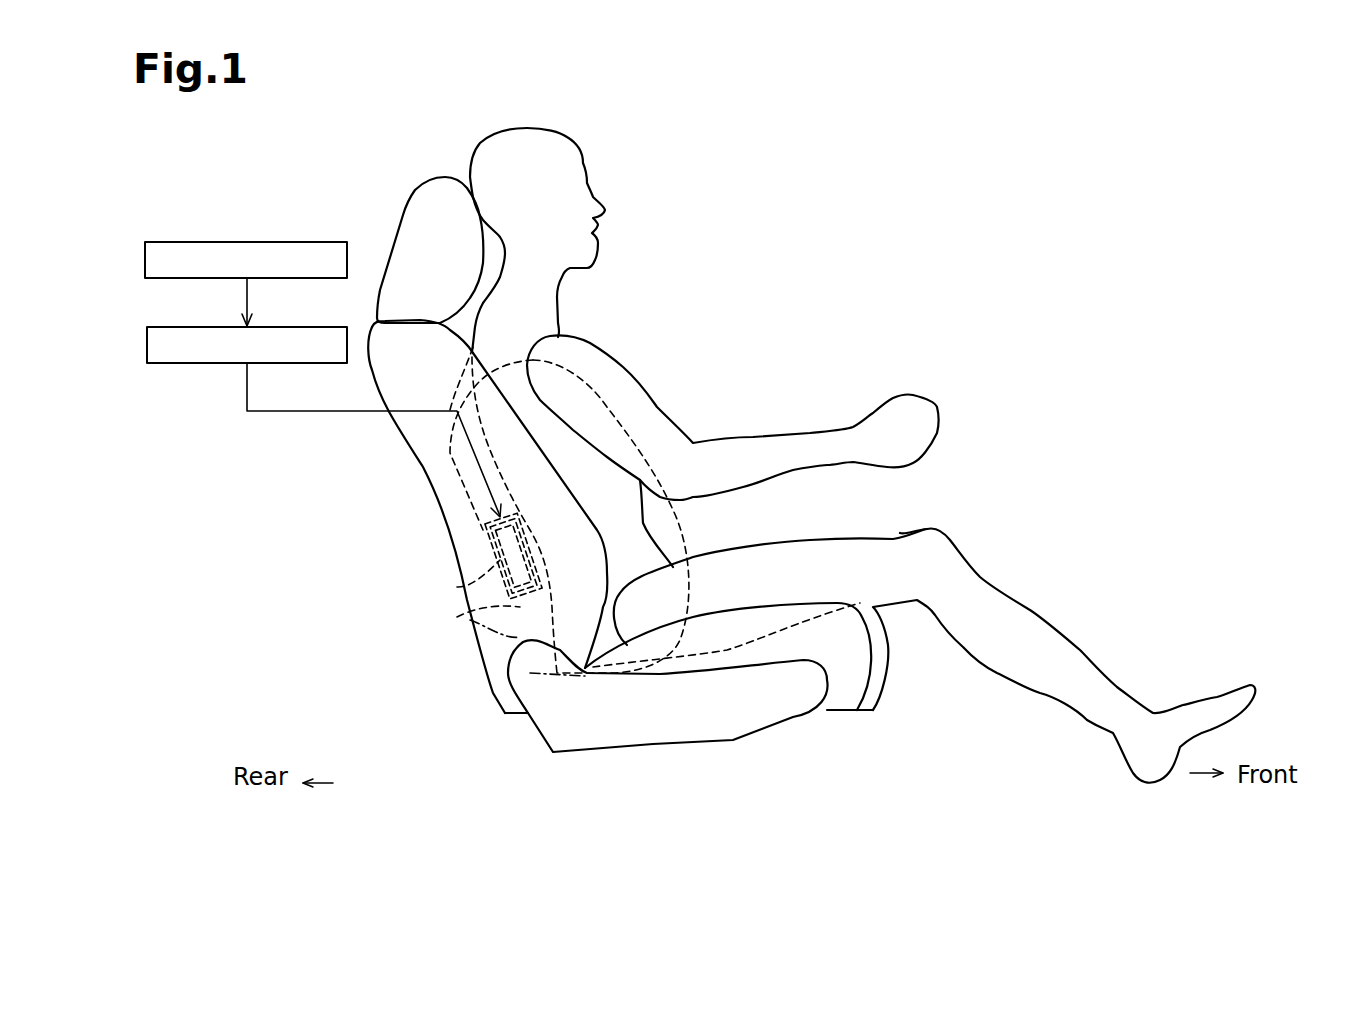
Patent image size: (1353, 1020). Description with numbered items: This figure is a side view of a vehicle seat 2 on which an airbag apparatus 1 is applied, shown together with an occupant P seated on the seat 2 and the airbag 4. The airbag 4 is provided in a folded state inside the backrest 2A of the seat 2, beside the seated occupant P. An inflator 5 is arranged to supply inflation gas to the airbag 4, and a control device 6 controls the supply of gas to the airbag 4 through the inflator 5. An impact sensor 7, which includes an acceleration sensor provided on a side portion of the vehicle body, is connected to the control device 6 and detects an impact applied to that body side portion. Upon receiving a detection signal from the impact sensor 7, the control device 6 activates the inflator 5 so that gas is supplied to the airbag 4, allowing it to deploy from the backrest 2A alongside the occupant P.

The airbag apparatus 1 is at (487, 527).
The seat 2 is at (495, 717).
The backrest 2A is at (430, 462).
The airbag 4 is at (562, 516).
The inflator 5 is at (471, 581).
The control device 6 is at (147, 343).
The impact sensor 7 is at (145, 258).
The occupant P is at (615, 226).